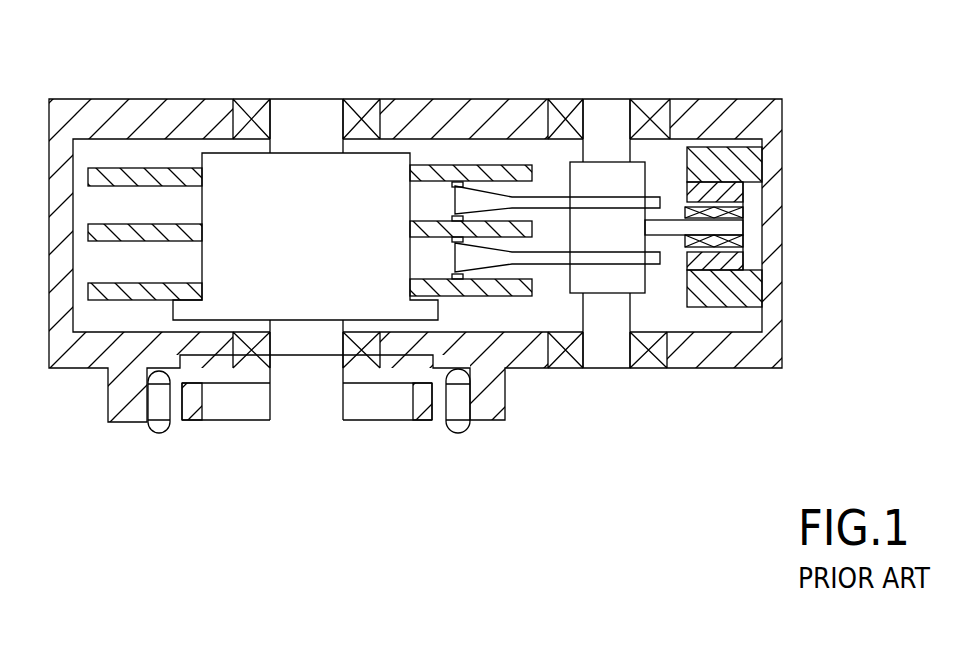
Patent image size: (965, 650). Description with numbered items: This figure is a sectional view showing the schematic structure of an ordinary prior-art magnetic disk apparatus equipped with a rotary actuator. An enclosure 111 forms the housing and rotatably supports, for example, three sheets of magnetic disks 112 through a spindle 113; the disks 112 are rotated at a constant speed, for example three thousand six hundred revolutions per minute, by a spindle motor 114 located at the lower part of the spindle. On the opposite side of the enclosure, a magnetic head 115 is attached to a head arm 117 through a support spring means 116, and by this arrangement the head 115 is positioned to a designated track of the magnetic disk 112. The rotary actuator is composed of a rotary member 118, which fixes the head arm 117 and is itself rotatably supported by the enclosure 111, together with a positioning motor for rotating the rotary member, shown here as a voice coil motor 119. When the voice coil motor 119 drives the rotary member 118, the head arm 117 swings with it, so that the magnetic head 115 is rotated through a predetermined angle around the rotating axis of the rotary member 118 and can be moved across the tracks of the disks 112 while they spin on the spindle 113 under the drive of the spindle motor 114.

The enclosure 111 is at (483, 99).
The magnetic disks 112 is at (115, 168).
The spindle 113 is at (199, 167).
The spindle motor 114 is at (242, 422).
The magnetic head 115 is at (455, 186).
The support spring means 116 is at (467, 270).
The head arm 117 is at (549, 192).
The rotary member 118 is at (615, 99).
The voice coil motor 119 is at (673, 267).